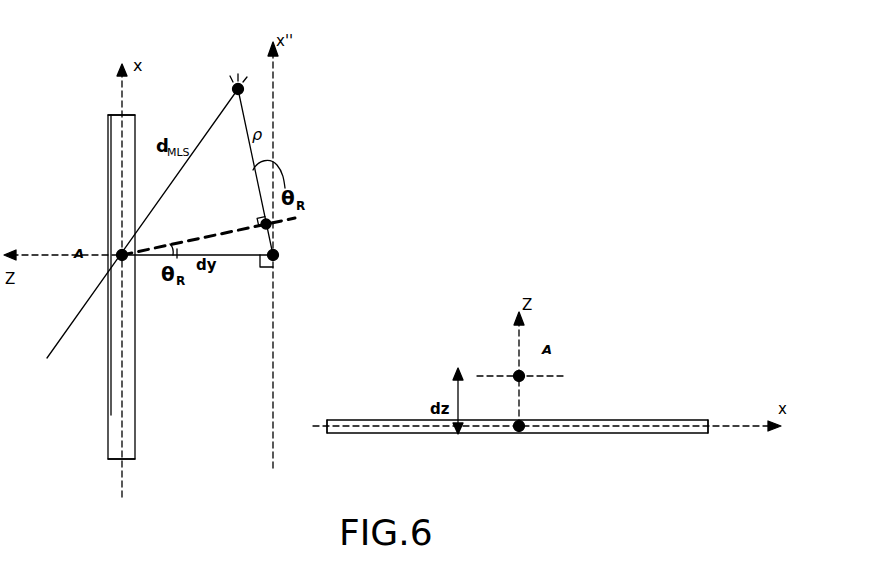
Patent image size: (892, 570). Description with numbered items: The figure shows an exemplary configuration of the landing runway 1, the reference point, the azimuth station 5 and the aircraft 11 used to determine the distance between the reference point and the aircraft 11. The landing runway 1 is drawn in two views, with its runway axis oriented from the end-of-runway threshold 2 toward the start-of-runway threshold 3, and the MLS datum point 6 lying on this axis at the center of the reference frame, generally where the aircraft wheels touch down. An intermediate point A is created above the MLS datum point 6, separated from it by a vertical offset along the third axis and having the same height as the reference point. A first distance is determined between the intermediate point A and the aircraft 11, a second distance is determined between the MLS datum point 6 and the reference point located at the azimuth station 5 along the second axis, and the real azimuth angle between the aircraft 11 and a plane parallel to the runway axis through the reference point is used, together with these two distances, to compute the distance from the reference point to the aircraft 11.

The landing runway 1 is at (136, 378).
The end-of-runway threshold 2 is at (128, 460).
The start-of-runway threshold 3 is at (131, 115).
The azimuth station 5 is at (280, 251).
The MLS datum point 6 is at (128, 262).
The aircraft 11 is at (236, 80).